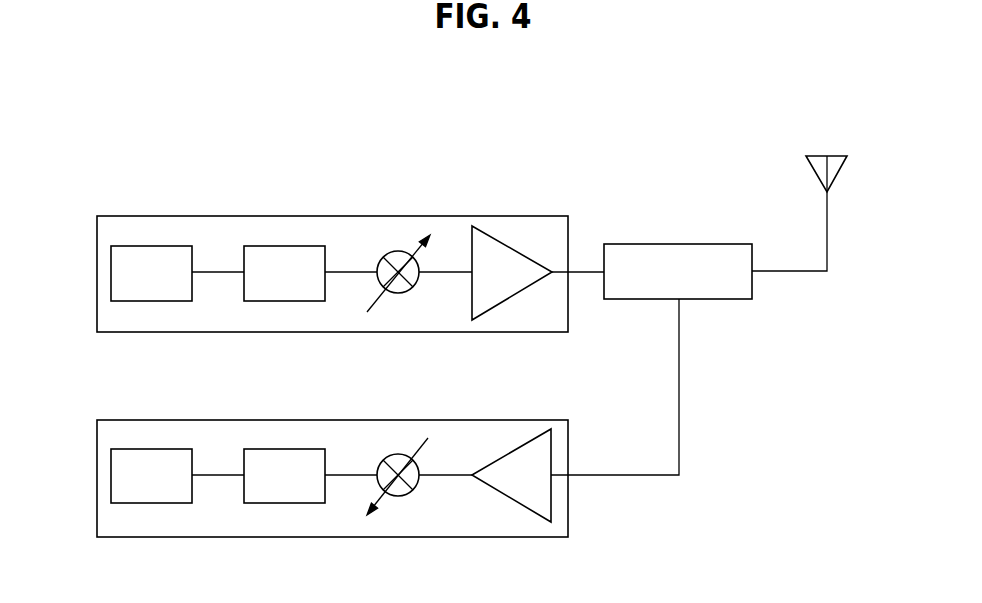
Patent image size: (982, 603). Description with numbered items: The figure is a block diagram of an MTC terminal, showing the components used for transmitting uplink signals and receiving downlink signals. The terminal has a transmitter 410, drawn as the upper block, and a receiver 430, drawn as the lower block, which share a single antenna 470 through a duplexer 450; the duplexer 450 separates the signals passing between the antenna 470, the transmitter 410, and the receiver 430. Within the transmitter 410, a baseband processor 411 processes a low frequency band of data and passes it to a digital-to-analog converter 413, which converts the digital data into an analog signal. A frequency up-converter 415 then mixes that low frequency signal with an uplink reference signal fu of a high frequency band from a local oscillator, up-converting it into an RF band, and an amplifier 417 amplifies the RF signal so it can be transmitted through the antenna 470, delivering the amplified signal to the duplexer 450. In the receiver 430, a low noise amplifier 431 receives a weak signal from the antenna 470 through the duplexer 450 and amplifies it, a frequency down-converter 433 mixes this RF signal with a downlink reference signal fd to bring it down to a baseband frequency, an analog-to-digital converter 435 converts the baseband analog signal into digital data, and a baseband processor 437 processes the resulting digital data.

The transmitter 410 is at (330, 216).
The baseband processor 411 is at (150, 245).
The digital-to-analog converter 413 is at (283, 245).
The frequency up-converter 415 is at (397, 250).
The amplifier 417 is at (510, 246).
The receiver 430 is at (330, 420).
The low noise amplifier 431 is at (510, 452).
The frequency down-converter 433 is at (397, 453).
The analog-to-digital converter 435 is at (283, 449).
The baseband processor 437 is at (150, 449).
The duplexer 450 is at (677, 244).
The antenna 470 is at (824, 157).